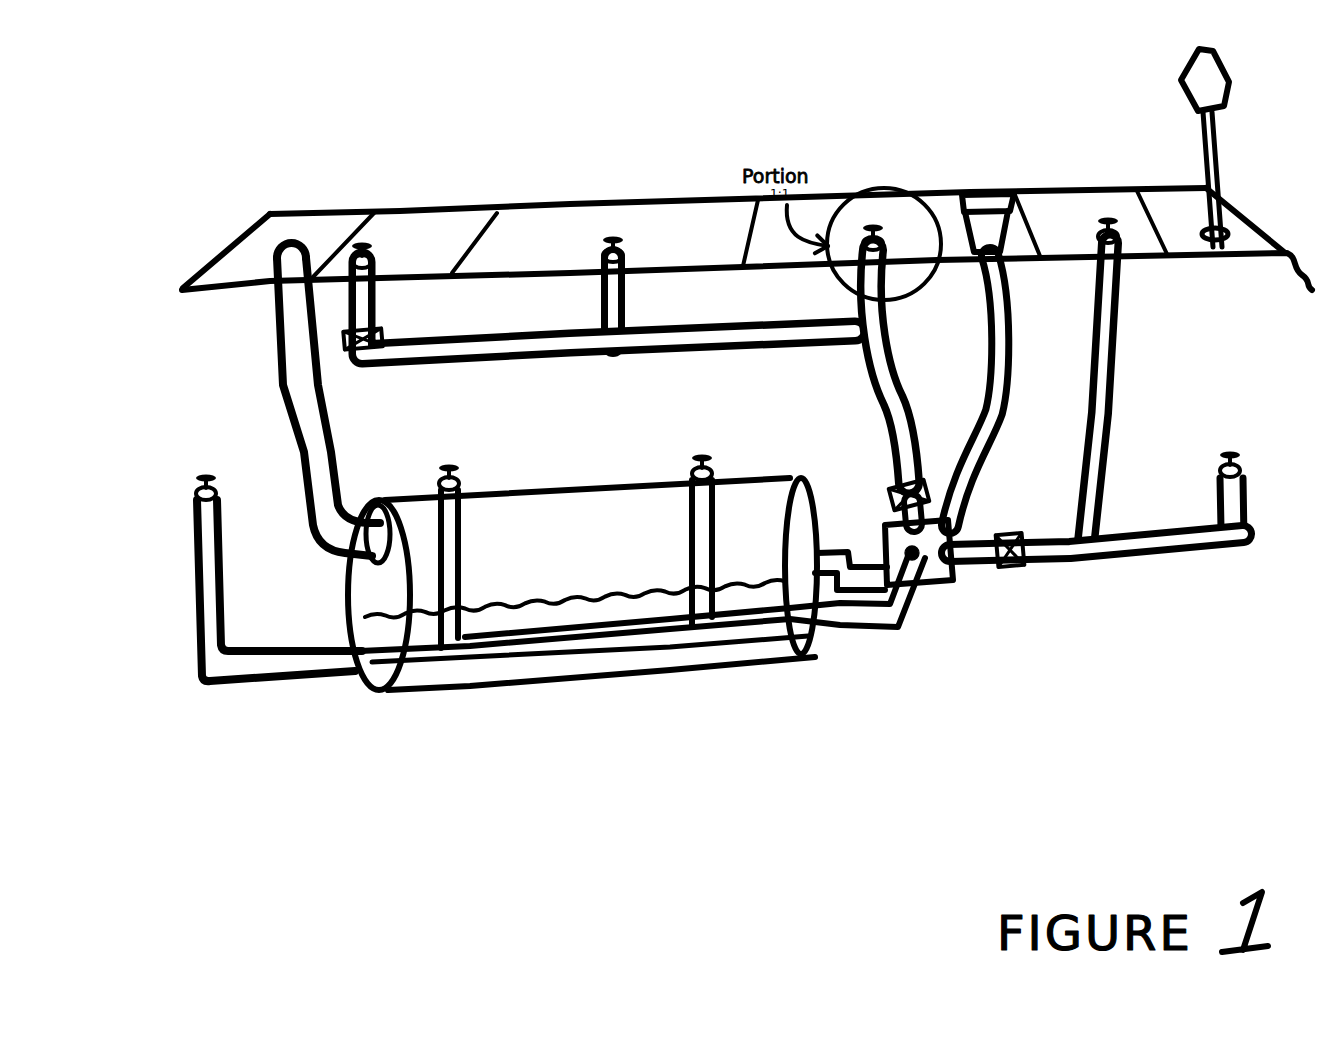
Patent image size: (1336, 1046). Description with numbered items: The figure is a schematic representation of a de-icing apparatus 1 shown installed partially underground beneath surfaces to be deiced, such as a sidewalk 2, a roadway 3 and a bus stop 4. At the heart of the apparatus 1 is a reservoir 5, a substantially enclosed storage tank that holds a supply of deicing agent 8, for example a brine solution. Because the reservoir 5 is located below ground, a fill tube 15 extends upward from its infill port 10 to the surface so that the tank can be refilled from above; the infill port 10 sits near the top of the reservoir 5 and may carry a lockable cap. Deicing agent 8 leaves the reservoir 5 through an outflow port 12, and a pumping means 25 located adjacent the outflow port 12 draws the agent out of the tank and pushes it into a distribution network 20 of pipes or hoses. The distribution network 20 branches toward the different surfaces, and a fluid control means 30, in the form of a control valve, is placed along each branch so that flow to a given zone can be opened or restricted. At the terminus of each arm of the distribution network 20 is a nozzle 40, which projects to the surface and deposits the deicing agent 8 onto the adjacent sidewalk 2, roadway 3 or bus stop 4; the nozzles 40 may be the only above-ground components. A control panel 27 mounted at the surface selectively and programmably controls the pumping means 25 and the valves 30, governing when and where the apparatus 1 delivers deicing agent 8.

The de-icing apparatus 1 is at (1007, 606).
The sidewalk 2 is at (532, 236).
The roadway 3 is at (185, 410).
The bus stop 4 is at (1236, 224).
The reservoir 5 is at (632, 532).
The deicing agent 8 is at (545, 628).
The infill port 10 is at (390, 540).
The outflow port 12 is at (835, 550).
The fill tube 15 is at (268, 353).
The distribution network 20 is at (1080, 388).
The pumping means 25 is at (936, 590).
The control panel 27 is at (1010, 204).
The fluid control means 30 is at (384, 338).
The nozzle 40 is at (376, 256).